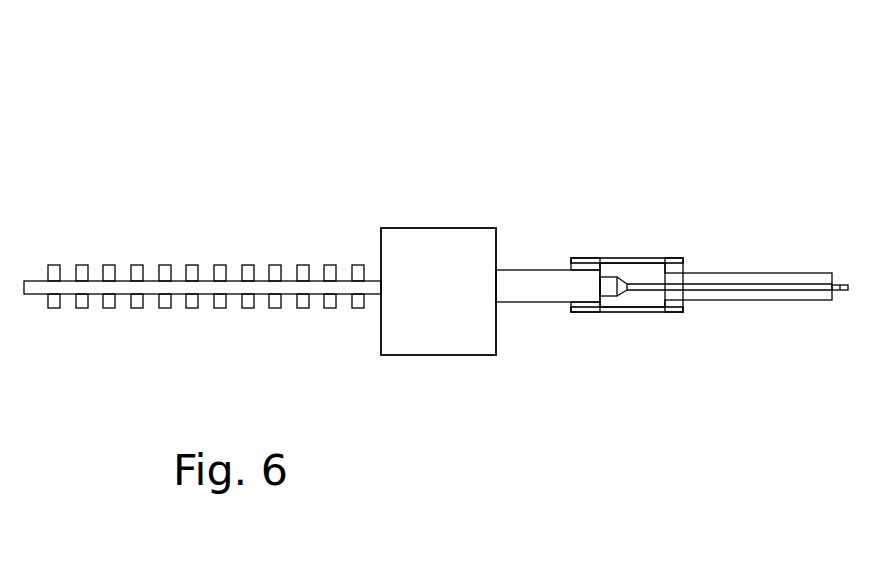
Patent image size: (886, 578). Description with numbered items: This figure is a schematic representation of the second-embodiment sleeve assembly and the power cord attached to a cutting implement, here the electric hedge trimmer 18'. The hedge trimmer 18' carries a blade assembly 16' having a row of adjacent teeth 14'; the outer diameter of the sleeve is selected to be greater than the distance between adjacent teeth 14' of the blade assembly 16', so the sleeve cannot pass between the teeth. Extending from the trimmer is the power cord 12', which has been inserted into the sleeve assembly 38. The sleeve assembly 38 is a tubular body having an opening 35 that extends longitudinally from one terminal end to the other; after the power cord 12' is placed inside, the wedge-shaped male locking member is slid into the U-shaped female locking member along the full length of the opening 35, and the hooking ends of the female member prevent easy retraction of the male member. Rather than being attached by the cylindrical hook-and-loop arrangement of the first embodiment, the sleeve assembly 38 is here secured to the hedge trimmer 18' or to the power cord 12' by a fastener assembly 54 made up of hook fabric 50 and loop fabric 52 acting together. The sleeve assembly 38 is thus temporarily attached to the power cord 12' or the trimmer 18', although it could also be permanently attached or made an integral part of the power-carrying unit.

The teeth 14' is at (206, 177).
The blade assembly 16' is at (202, 185).
The electric hedge trimmer 18' is at (415, 190).
The hook fabric 50 is at (626, 307).
The fastener assembly 54 is at (639, 225).
The loop fabric 52 is at (606, 261).
The sleeve assembly 38 is at (803, 285).
The opening 35 is at (787, 300).
The power cord 12' is at (848, 358).